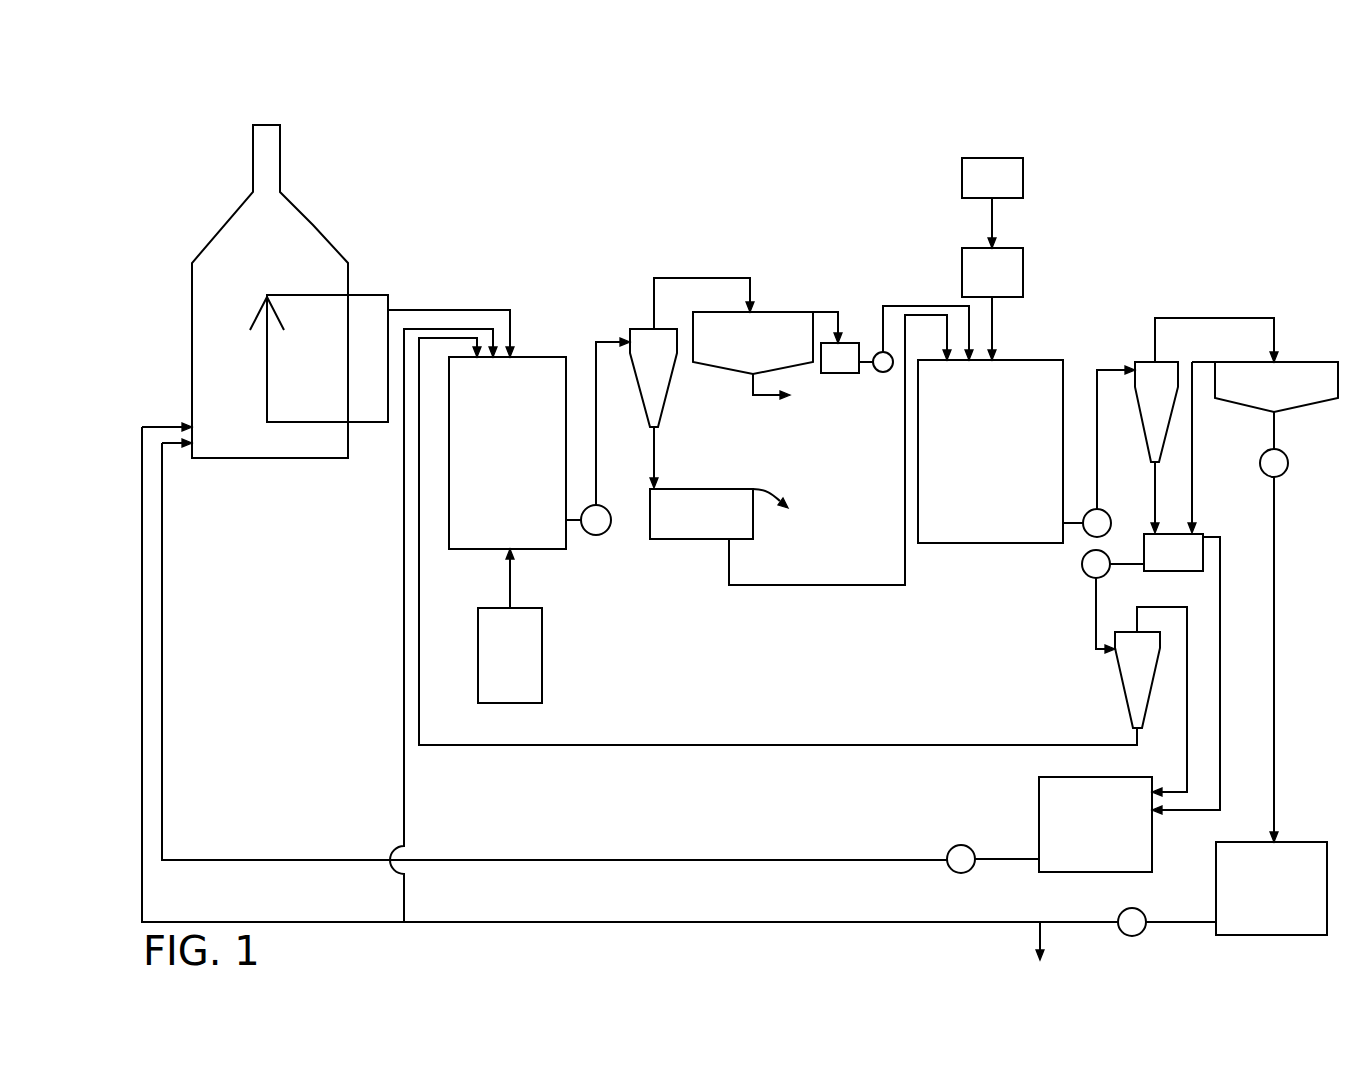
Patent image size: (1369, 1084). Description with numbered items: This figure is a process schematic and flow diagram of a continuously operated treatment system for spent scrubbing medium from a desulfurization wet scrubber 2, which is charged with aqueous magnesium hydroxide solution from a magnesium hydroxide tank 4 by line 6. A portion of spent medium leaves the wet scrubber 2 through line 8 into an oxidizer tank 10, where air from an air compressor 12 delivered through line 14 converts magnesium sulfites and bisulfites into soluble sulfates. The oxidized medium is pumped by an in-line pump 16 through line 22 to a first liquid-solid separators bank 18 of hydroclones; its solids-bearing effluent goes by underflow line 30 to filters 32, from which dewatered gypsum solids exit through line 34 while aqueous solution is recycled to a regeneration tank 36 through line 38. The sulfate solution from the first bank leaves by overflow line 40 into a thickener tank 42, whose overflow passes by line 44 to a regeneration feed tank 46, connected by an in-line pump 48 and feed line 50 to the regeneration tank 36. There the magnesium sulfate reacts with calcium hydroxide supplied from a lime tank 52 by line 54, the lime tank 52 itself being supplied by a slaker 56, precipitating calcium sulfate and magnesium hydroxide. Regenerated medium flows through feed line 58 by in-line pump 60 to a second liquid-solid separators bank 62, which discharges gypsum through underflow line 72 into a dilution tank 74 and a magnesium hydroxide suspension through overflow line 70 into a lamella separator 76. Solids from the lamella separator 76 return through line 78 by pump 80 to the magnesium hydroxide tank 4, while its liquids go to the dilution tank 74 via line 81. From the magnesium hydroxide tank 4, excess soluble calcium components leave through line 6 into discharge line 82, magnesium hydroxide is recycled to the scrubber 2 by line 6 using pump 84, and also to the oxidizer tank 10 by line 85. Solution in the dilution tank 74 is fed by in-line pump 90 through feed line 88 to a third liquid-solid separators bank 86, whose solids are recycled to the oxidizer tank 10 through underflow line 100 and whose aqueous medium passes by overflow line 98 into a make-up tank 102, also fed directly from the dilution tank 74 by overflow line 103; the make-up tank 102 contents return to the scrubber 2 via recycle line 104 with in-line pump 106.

The wet scrubber 2 is at (205, 342).
The magnesium hydroxide tank 4 is at (1300, 845).
The line 6 is at (149, 427).
The line 8 is at (458, 312).
The oxidizer tank 10 is at (540, 370).
The air compressor 12 is at (542, 680).
The line 14 is at (510, 580).
The in-line pump 16 is at (596, 535).
The first liquid-solid separators bank 18 is at (660, 397).
The line 22 is at (596, 400).
The underflow line 30 is at (654, 463).
The filters 32 is at (699, 533).
The line 34 is at (775, 495).
The regeneration tank 36 is at (985, 540).
The line 38 is at (822, 585).
The overflow line 40 is at (697, 278).
The thickener tank 42 is at (760, 322).
The line 44 is at (830, 312).
The regeneration feed tank 46 is at (845, 373).
The in-line pump 48 is at (883, 372).
The feed line 50 is at (905, 306).
The lime tank 52 is at (1023, 280).
The line 54 is at (997, 330).
The slaker 56 is at (1023, 180).
The feed line 58 is at (1115, 370).
The in-line pump 60 is at (1105, 512).
The second liquid-solid separators bank 62 is at (1163, 373).
The overflow line 70 is at (1218, 318).
The underflow line 72 is at (1150, 479).
The dilution tank 74 is at (1190, 540).
The lamella separator 76 is at (1288, 366).
The line 78 is at (1276, 660).
The pump 80 is at (1288, 463).
The line 81 is at (1192, 457).
The discharge line 82 is at (1040, 934).
The pump 84 is at (1120, 917).
The line 85 is at (404, 785).
The third liquid-solid separators bank 86 is at (1130, 693).
The feed line 88 is at (1096, 623).
The in-line pump 90 is at (1082, 564).
The overflow line 98 is at (1150, 607).
The underflow line 100 is at (920, 745).
The make-up tank 102 is at (1047, 815).
The overflow line 103 is at (1220, 725).
The recycle line 104 is at (655, 860).
The in-line pump 106 is at (948, 849).